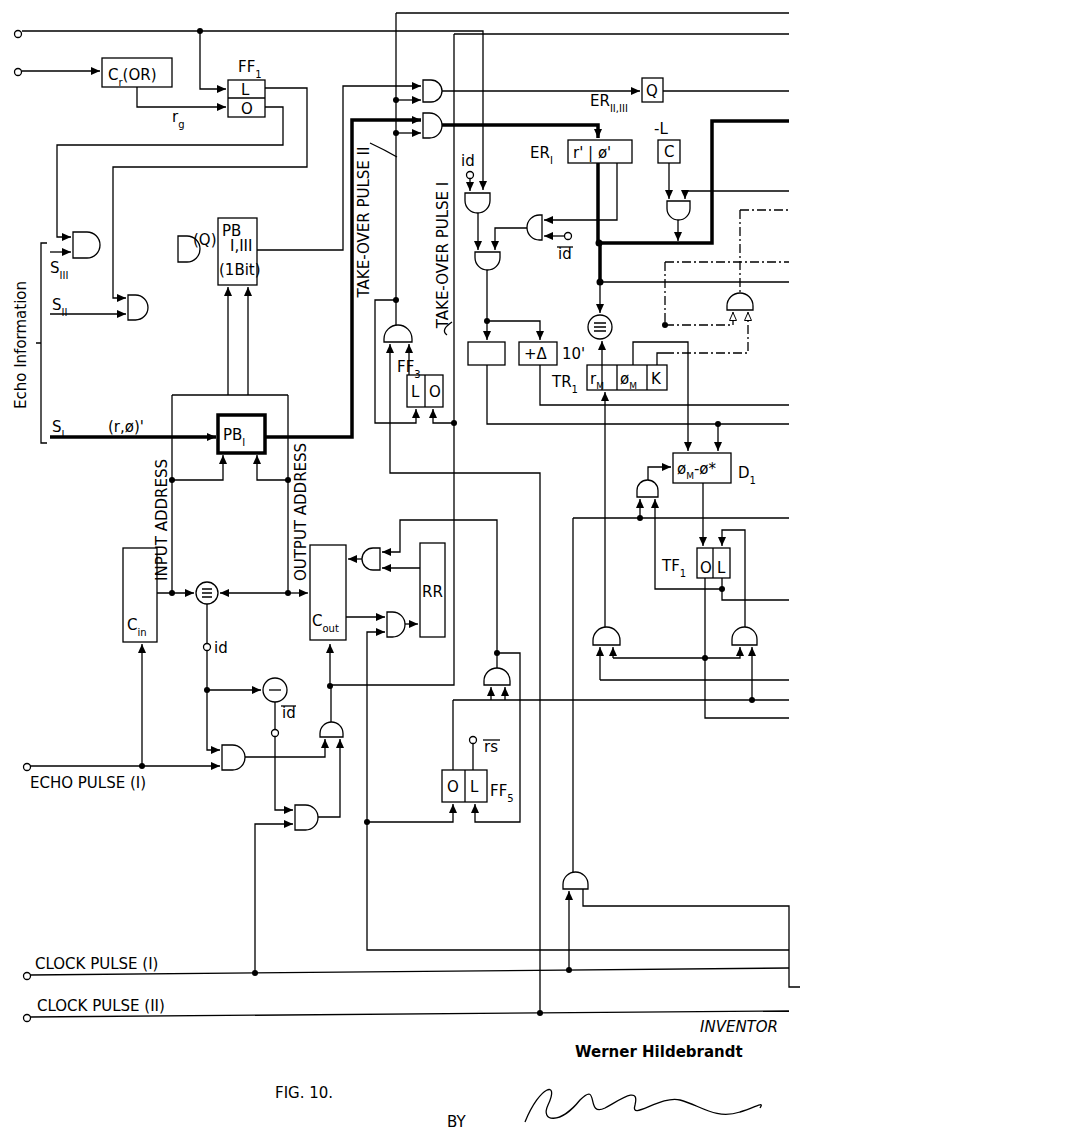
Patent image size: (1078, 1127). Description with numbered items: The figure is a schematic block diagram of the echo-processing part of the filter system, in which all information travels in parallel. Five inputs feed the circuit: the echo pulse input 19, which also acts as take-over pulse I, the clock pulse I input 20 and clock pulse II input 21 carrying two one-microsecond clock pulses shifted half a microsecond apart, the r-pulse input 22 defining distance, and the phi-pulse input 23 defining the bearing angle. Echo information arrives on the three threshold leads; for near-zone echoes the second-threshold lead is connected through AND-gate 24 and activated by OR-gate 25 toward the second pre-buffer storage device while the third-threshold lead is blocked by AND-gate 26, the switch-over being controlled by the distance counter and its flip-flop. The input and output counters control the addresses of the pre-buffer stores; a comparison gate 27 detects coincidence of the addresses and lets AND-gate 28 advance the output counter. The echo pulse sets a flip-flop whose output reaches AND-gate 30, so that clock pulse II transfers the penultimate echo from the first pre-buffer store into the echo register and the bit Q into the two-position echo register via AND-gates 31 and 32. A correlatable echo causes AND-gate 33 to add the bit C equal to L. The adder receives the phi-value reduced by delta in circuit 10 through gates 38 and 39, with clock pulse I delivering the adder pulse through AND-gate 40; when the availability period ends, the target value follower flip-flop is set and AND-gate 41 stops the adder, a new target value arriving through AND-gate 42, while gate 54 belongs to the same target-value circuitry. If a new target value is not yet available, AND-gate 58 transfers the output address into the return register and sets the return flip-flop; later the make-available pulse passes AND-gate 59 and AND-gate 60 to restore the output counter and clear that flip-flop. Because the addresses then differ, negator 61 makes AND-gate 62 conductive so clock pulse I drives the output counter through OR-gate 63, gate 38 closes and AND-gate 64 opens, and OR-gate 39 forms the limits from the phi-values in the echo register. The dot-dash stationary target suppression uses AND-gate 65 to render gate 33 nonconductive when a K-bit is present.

The echo pulse input 19 is at (45, 749).
The clock pulse I input 20 is at (35, 978).
The clock pulse II input 21 is at (35, 1021).
The r-pulse input 22 is at (22, 69).
The phi-pulse input 23 is at (22, 38).
The AND-gate 24 is at (143, 320).
The OR-gate 25 is at (196, 262).
The AND-gate 26 is at (96, 259).
The comparison gate 27 is at (216, 572).
The AND-gate 28 is at (240, 770).
The AND-gate 30 is at (416, 330).
The AND-gate 31 is at (436, 138).
The AND-gate 32 is at (435, 83).
The AND-gate 33 is at (668, 206).
The AND-gate 38 is at (486, 210).
The OR-gate 39 is at (495, 268).
The AND-gate 40 is at (590, 870).
The AND-gate 41 is at (637, 484).
The AND-gate 42 is at (596, 630).
The AND gate 54 is at (737, 631).
The AND-gate 58 is at (398, 637).
The AND-gate 59 is at (487, 672).
The AND-gate 60 is at (370, 548).
The negator 61 is at (283, 680).
The AND-gate 62 is at (315, 800).
The OR-gate 63 is at (340, 724).
The AND-gate 64 is at (537, 215).
The AND-gate 65 is at (757, 293).
The circuit 10 is at (482, 365).